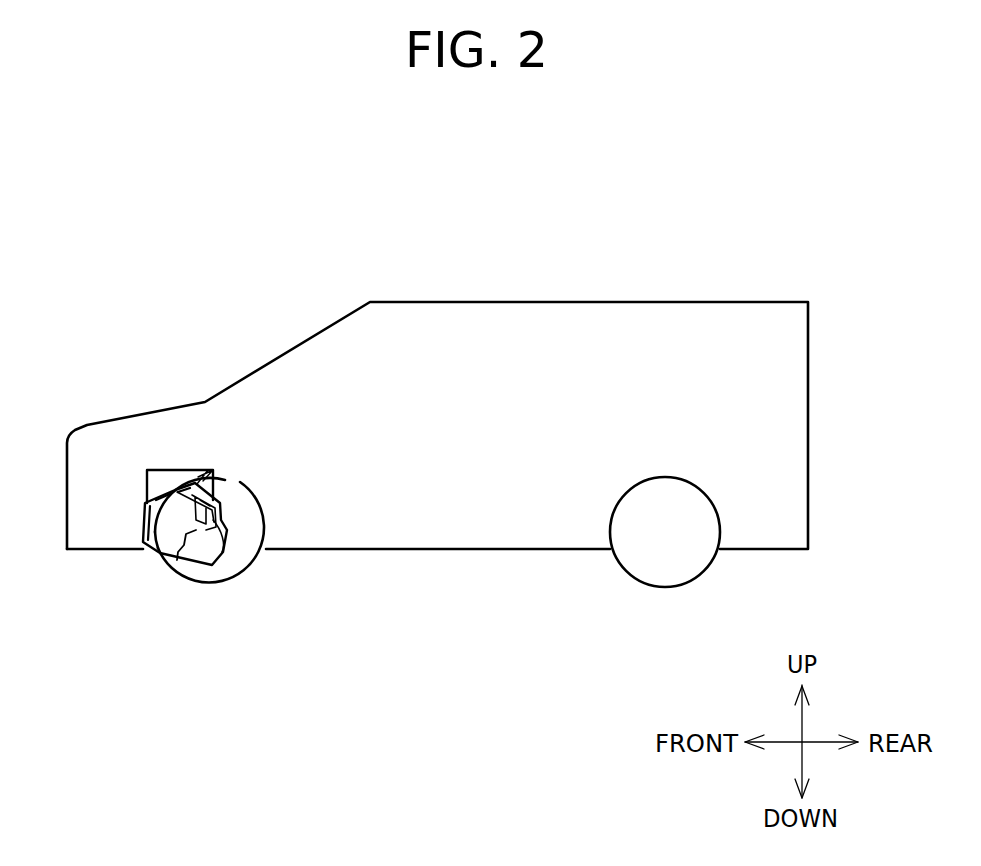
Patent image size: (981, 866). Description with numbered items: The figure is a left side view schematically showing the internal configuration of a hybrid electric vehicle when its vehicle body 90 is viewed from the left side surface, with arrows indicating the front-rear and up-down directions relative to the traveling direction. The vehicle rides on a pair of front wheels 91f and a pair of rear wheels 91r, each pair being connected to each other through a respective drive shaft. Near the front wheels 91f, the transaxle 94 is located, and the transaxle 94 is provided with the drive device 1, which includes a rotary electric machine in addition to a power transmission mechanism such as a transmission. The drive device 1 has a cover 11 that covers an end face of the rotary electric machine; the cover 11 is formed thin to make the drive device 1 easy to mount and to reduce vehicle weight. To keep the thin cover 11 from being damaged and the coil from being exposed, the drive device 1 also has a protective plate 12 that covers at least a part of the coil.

The vehicle body 90 is at (790, 301).
The front wheels 91f is at (172, 576).
The rear wheels 91r is at (716, 506).
The drive device 1 is at (214, 470).
The cover 11 is at (143, 501).
The protective plate 12 is at (225, 510).
The transaxle 94 is at (210, 550).